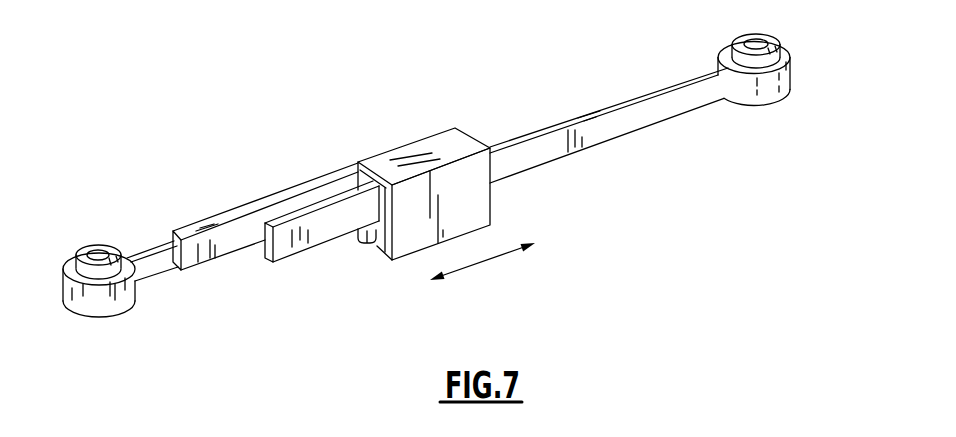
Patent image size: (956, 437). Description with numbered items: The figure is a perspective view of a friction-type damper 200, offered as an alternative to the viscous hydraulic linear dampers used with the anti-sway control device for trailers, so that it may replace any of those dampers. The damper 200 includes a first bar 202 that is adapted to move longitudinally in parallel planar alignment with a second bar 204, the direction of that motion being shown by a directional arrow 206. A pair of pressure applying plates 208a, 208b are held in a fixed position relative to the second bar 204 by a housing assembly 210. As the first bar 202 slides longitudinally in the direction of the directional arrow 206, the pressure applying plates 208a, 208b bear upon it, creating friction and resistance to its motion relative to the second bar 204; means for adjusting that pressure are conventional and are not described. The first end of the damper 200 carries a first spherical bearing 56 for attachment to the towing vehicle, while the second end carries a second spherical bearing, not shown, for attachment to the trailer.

The friction-type damper 200 is at (240, 101).
The first bar 202 is at (645, 130).
The second bar 204 is at (230, 217).
The directional arrow 206 is at (480, 263).
The pressure applying plate 208a is at (367, 244).
The pressure applying plate 208b is at (380, 246).
The housing assembly 210 is at (419, 118).
The first spherical bearing 56 is at (777, 102).